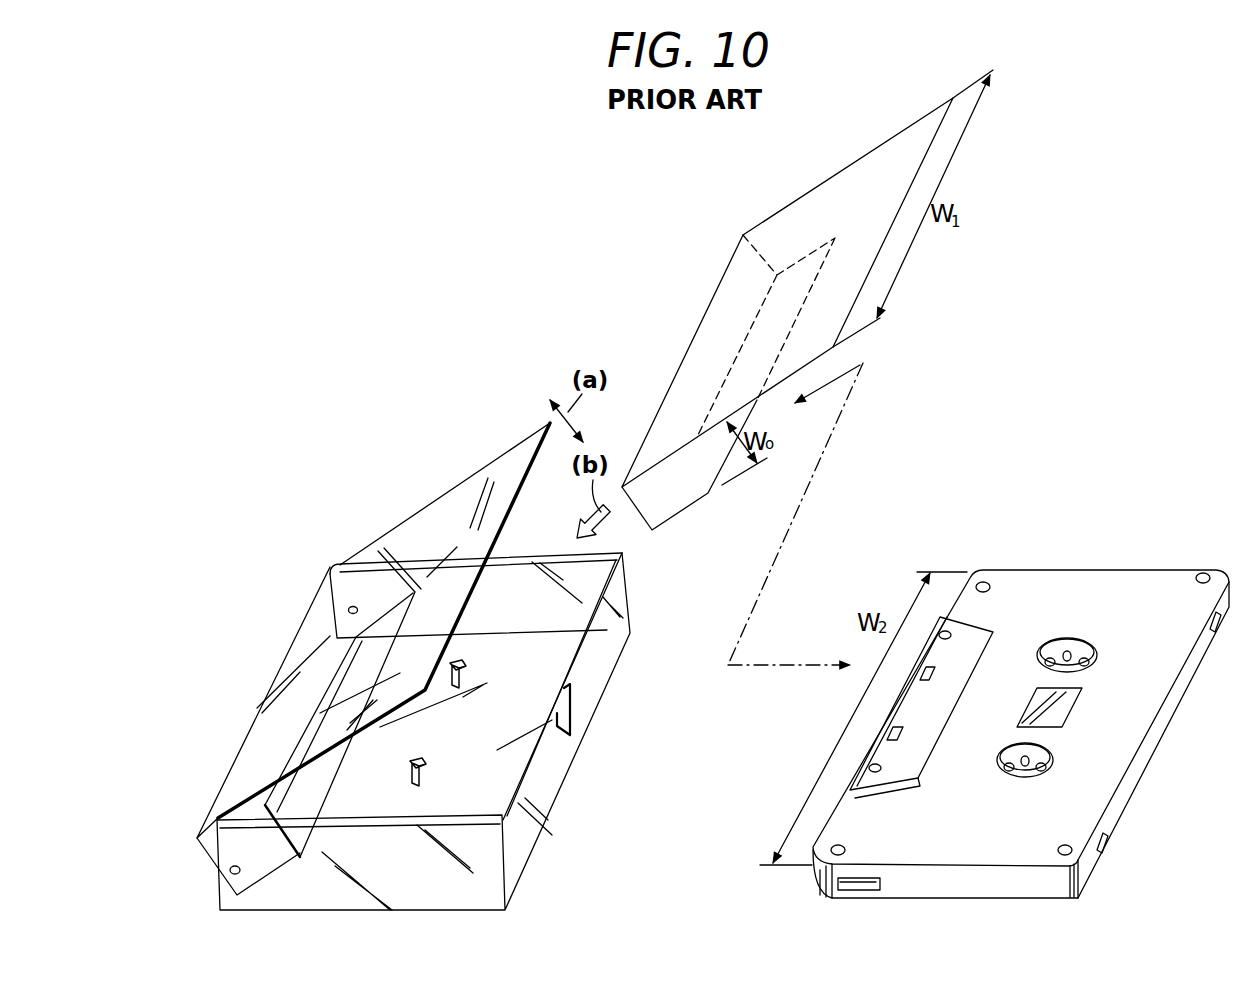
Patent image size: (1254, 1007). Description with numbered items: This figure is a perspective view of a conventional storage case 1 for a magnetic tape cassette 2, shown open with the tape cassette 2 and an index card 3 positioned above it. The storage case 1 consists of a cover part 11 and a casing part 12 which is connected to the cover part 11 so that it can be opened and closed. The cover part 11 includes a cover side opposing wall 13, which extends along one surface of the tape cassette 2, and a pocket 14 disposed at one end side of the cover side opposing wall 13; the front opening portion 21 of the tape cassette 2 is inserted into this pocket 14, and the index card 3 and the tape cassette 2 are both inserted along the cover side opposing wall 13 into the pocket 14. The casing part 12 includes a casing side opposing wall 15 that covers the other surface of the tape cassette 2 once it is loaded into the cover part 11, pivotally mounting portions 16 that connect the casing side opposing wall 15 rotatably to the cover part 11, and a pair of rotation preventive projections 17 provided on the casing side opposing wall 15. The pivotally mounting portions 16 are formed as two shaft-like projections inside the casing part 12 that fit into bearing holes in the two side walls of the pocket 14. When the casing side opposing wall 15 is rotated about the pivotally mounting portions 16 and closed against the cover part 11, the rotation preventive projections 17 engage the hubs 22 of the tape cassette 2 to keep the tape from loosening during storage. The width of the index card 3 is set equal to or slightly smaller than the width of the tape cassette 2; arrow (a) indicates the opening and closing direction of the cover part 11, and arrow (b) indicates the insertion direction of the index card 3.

The storage case 1 is at (332, 555).
The tape cassette 2 is at (1037, 566).
The index card 3 is at (798, 205).
The cover part 11 is at (466, 477).
The casing part 12 is at (580, 748).
The cover side opposing wall 13 is at (437, 543).
The pocket 14 is at (312, 790).
The casing side opposing wall 15 is at (543, 675).
The pivotally mounting portions 16 is at (350, 606).
The rotation preventive projections 17 is at (472, 665).
The front opening portion 21 is at (890, 713).
The hubs 22 is at (1043, 747).